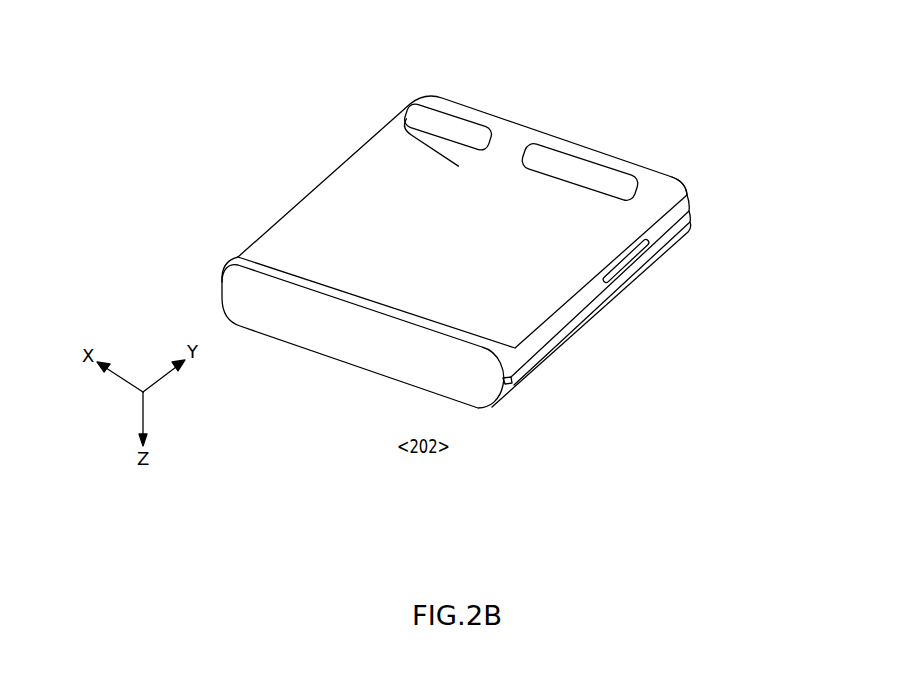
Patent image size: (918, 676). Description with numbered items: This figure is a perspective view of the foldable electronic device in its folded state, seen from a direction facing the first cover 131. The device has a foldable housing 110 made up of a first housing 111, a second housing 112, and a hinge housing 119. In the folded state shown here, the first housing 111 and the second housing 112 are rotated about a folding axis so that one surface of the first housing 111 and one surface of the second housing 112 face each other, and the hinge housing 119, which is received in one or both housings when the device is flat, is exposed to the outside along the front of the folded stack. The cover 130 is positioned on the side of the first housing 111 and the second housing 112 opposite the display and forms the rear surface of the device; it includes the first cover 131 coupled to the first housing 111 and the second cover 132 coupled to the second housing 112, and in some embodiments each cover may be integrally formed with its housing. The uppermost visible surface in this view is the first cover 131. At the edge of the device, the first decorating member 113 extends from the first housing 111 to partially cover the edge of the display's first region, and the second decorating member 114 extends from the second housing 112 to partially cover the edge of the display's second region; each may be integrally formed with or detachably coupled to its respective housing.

The foldable housing 110 is at (510, 311).
The first housing 111 is at (687, 184).
The second housing 112 is at (688, 228).
The first decorating member 113 is at (688, 201).
The second decorating member 114 is at (690, 215).
The hinge housing 119 is at (353, 342).
The cover 130 is at (605, 290).
The first cover 131 is at (498, 168).
The second cover 132 is at (518, 152).